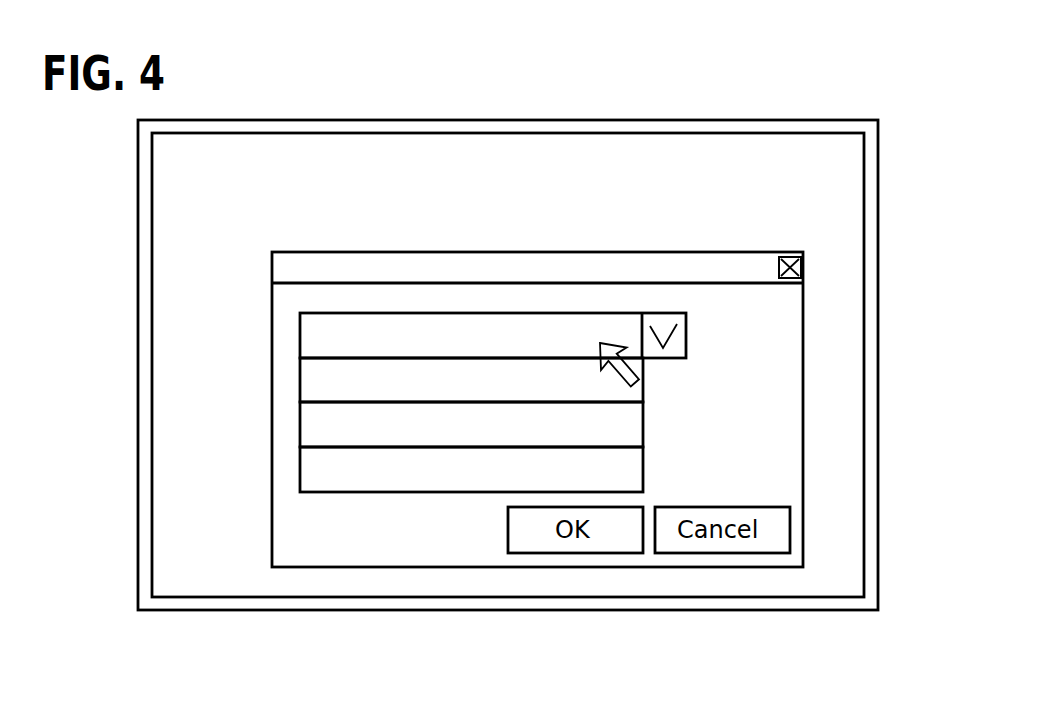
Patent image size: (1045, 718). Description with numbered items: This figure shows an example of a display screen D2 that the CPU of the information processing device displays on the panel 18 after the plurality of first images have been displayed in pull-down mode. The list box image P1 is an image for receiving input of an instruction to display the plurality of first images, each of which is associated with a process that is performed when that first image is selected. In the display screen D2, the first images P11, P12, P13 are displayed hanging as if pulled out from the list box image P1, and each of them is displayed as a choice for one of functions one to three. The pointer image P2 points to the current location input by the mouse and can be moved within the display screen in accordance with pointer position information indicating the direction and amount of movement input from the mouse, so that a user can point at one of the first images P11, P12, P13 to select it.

The panel 18 is at (762, 102).
The display screen D2 is at (829, 147).
The list box image P1 is at (300, 337).
The first image P11 is at (300, 381).
The first image P12 is at (300, 426).
The first image P13 is at (300, 471).
The pointer image P2 is at (634, 384).